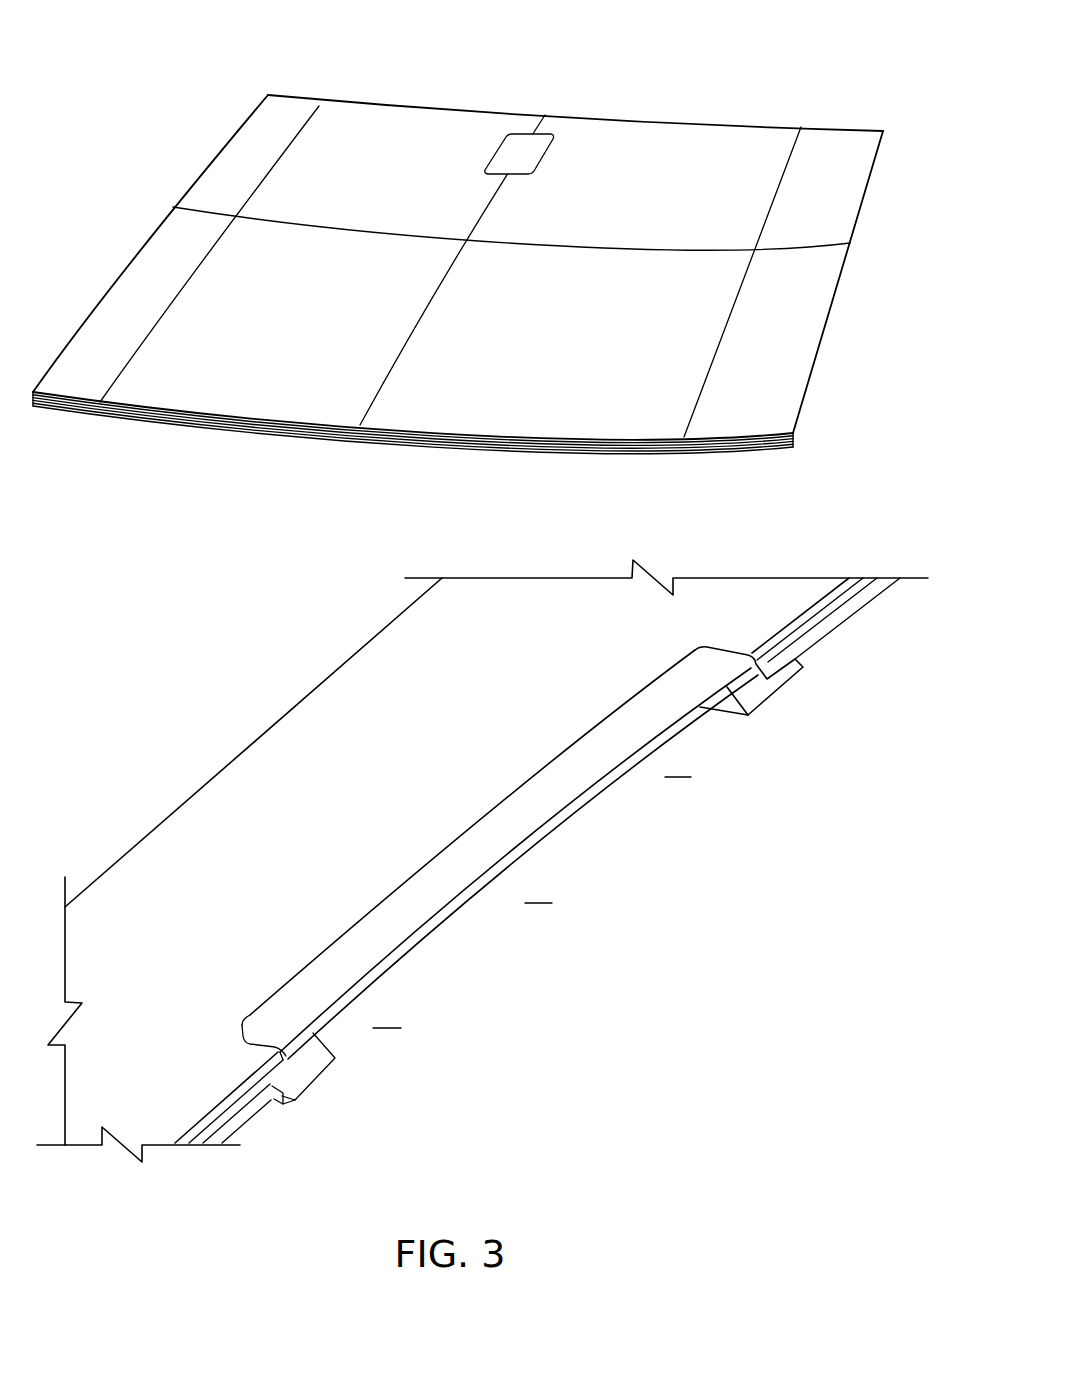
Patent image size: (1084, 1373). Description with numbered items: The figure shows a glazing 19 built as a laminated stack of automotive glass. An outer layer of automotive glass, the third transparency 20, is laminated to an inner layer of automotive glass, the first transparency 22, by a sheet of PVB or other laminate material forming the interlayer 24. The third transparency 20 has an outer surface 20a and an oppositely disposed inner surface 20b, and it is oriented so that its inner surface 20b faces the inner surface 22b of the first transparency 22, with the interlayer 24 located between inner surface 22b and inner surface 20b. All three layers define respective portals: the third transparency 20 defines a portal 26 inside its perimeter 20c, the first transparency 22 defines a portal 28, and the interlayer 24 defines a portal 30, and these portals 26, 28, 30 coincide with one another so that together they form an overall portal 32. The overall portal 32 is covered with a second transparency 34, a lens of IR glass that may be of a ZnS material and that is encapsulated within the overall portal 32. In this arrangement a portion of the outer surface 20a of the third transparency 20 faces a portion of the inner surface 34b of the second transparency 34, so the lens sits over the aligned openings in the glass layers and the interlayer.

The glazing 19 is at (389, 170).
The third transparency 20 is at (208, 893).
The outer surface 20a is at (385, 697).
The inner surface 20b is at (213, 1143).
The perimeter 20c is at (633, 116).
The first transparency 22 is at (247, 1108).
The inner surface 22b is at (293, 1073).
The interlayer 24 is at (257, 1107).
The portal 26 is at (732, 712).
The portal 28 is at (342, 1029).
The portal 30 is at (504, 854).
The overall portal 32 is at (518, 157).
The second transparency 34 is at (553, 782).
The inner surface 34b is at (248, 1048).